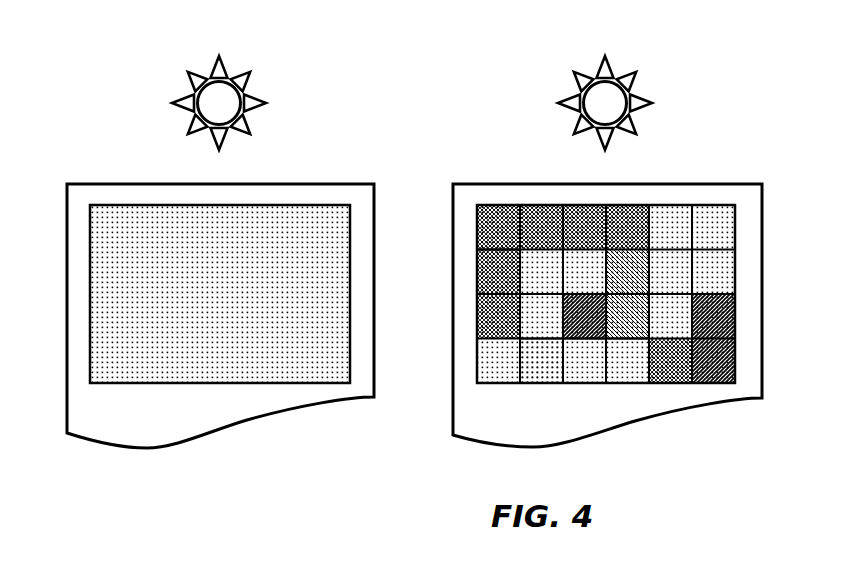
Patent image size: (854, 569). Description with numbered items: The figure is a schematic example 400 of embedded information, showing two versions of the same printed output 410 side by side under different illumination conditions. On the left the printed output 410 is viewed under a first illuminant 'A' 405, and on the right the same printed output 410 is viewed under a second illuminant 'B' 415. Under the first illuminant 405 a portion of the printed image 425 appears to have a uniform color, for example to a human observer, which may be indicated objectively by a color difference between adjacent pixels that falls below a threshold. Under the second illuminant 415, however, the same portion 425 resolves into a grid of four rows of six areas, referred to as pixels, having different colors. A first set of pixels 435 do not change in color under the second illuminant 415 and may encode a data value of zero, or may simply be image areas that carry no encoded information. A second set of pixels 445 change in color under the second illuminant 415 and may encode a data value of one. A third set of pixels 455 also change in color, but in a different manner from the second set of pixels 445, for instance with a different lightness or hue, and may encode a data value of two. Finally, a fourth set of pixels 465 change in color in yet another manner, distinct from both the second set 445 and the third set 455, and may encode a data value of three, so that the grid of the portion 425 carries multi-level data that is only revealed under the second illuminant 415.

The example of embedded information 400 is at (113, 47).
The first illuminant 'A' 405 is at (250, 81).
The second illuminant 'B' 415 is at (636, 81).
The printed output 410 is at (330, 183).
The portion of a printed image 425 is at (163, 357).
The second set of pixels 445 is at (493, 220).
The first set of pixels 435 is at (542, 362).
The fourth set of pixels 465 is at (588, 322).
The third set of pixels 455 is at (633, 333).